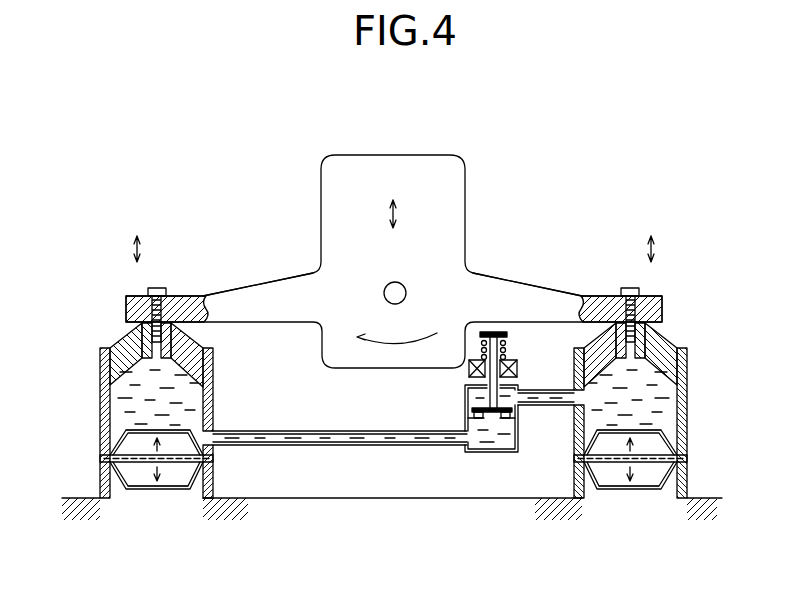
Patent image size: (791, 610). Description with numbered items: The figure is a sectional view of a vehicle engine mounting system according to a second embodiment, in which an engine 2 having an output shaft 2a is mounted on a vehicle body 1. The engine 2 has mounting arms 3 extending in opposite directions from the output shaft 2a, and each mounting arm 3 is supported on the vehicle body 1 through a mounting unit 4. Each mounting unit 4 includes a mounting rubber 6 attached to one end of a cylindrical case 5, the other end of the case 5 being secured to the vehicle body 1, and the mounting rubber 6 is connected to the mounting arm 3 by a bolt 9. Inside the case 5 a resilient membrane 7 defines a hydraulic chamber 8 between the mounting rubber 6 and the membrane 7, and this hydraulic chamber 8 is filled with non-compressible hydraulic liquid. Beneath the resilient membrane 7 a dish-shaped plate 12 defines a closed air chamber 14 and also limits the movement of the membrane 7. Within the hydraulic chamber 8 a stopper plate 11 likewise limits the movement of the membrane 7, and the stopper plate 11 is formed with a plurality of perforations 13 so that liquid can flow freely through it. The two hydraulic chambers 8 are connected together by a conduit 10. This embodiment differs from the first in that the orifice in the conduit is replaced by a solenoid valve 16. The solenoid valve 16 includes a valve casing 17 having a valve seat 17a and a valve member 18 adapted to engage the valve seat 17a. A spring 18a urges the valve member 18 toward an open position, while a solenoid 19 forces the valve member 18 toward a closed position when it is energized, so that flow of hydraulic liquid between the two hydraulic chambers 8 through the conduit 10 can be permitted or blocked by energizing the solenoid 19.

The vehicle body 1 is at (232, 507).
The engine 2 is at (460, 148).
The output shaft 2a is at (405, 283).
The mounting arm 3 is at (257, 289).
The mounting unit 4 is at (385, 384).
The cylindrical case 5 is at (103, 382).
The mounting rubber 6 is at (128, 340).
The resilient membrane 7 is at (118, 457).
The hydraulic chamber 8 is at (198, 398).
The bolt 9 is at (157, 288).
The conduit 10 is at (270, 447).
The stopper plate 11 is at (200, 428).
The dish-shaped plate 12 is at (133, 490).
The perforations 13 is at (127, 431).
The closed air chamber 14 is at (170, 478).
The solenoid valve 16 is at (459, 458).
The valve casing 17 is at (507, 453).
The valve seat 17a is at (467, 415).
The valve member 18 is at (497, 333).
The spring 18a is at (480, 345).
The solenoid 19 is at (517, 368).